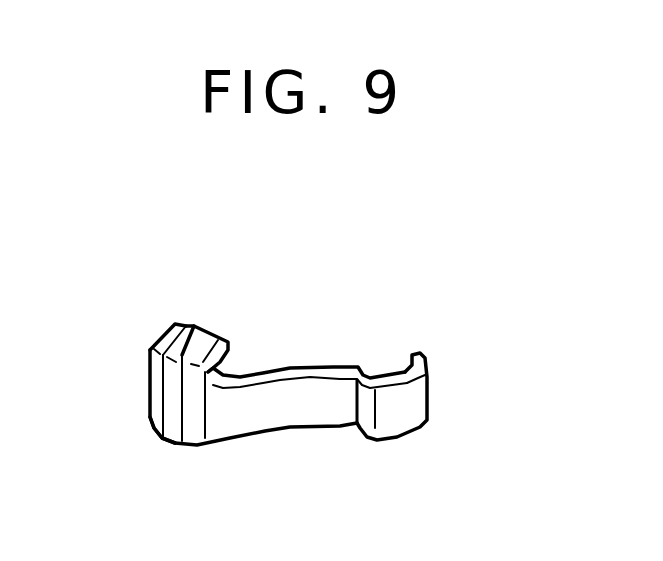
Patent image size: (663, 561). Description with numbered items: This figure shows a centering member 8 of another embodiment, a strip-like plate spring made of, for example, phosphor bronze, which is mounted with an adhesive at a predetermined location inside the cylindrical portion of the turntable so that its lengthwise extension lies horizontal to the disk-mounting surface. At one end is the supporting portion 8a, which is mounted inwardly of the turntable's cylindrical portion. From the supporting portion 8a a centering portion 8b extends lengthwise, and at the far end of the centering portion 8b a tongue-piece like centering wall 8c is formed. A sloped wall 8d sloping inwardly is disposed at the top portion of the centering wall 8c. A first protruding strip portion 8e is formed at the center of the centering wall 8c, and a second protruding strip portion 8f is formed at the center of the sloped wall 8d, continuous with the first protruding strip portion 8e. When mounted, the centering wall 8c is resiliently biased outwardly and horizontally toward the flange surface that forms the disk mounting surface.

The centering member 8 is at (287, 375).
The supporting portion 8a is at (415, 397).
The centering portion 8b is at (263, 427).
The centering wall 8c is at (152, 383).
The sloped wall 8d is at (165, 333).
The first protruding strip portion 8e is at (172, 418).
The second protruding strip portion 8f is at (195, 330).